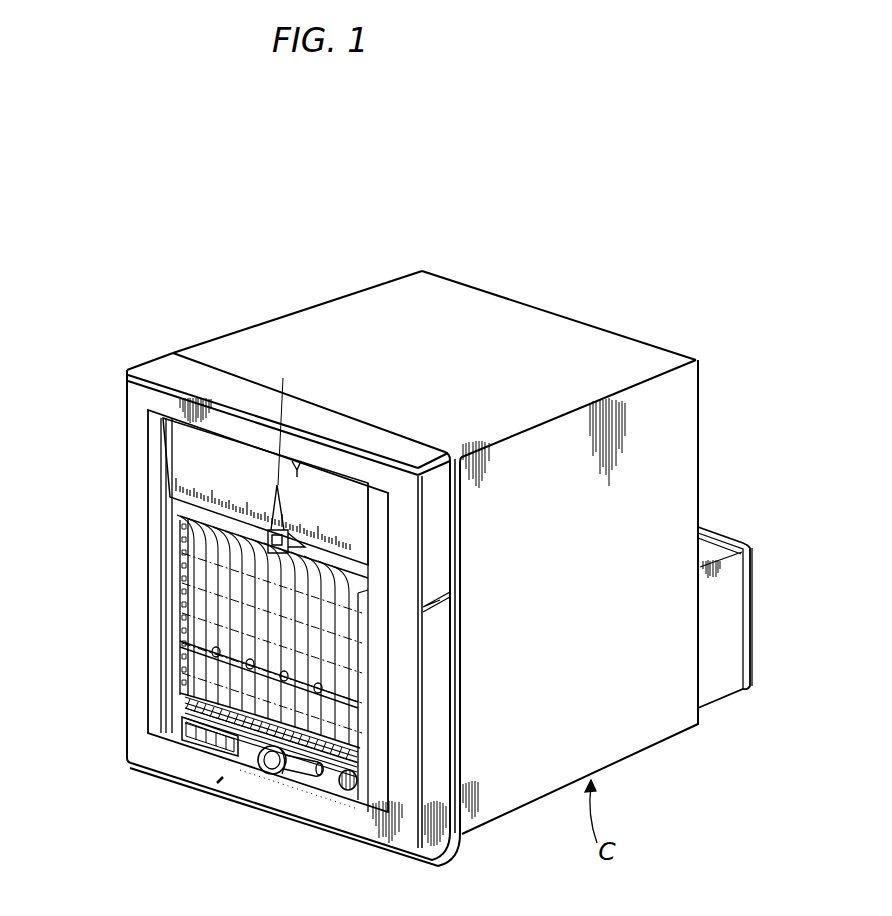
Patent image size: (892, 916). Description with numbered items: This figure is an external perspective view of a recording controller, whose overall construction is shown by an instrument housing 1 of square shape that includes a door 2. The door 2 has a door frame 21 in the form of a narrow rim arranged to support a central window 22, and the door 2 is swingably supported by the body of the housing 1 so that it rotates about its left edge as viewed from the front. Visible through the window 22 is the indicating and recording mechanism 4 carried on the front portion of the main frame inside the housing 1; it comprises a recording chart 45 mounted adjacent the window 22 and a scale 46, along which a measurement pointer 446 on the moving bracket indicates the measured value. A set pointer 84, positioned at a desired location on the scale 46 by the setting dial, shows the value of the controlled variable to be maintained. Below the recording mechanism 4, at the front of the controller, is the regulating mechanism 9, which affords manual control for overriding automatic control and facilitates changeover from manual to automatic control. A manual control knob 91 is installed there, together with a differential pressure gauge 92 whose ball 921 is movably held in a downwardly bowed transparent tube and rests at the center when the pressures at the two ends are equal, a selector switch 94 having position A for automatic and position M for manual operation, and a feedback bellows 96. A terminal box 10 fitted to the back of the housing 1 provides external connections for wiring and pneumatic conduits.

The instrument housing 1 is at (300, 300).
The door 2 is at (438, 535).
The terminal box 10 is at (715, 528).
The door frame 21 is at (136, 589).
The central window 22 is at (332, 482).
The indicating and recording mechanism 4 is at (176, 514).
The recording chart 45 is at (188, 623).
The scale 46 is at (178, 432).
The set pointer 84 is at (301, 462).
The measurement pointer 446 is at (287, 418).
The regulating mechanism 9 is at (193, 808).
The manual control knob 91 is at (352, 792).
The differential pressure gauge 92 is at (307, 778).
The ball 921 is at (286, 790).
The selector switch 94 is at (253, 793).
The feedback bellows 96 is at (190, 735).